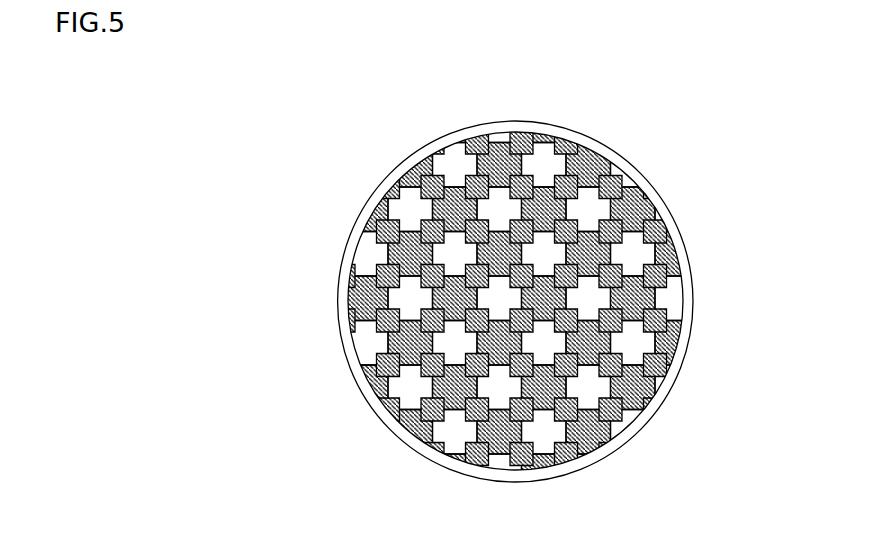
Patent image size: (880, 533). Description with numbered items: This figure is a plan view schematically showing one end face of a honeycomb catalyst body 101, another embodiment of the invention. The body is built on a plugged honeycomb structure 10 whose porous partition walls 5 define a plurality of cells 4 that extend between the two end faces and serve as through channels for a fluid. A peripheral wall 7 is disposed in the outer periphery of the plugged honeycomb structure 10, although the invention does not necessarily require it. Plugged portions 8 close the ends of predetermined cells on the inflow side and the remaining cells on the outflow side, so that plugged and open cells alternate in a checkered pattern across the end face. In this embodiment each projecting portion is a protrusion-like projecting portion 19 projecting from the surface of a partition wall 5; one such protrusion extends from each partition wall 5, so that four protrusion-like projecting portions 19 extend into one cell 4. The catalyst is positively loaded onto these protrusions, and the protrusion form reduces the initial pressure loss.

The peripheral wall 7 is at (517, 121).
The honeycomb catalyst body 101 is at (782, 85).
The cell 4 is at (607, 181).
The protrusion-like projecting portion 19 is at (645, 218).
The partition wall 5 is at (680, 307).
The plugged honeycomb structure 10 is at (694, 343).
The plugged portion 8 is at (603, 433).